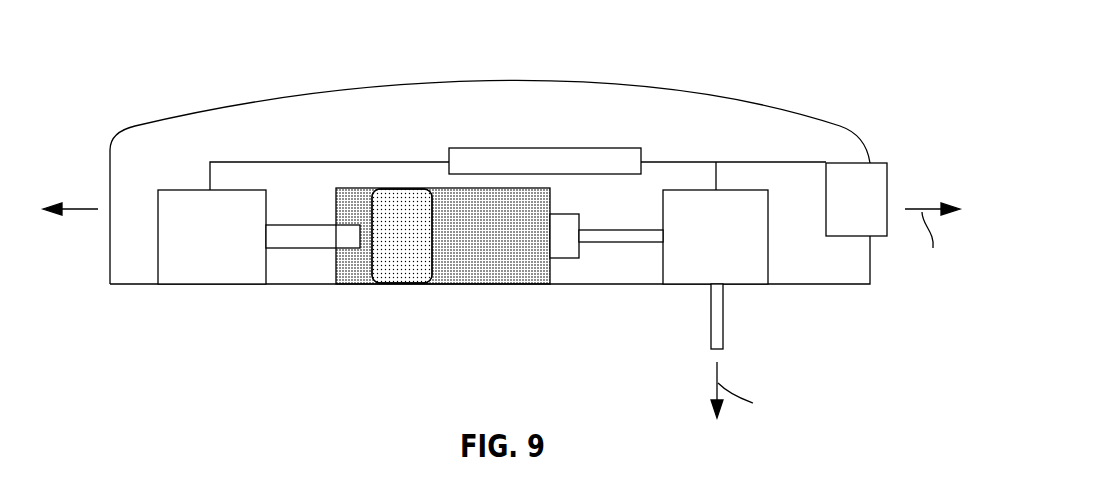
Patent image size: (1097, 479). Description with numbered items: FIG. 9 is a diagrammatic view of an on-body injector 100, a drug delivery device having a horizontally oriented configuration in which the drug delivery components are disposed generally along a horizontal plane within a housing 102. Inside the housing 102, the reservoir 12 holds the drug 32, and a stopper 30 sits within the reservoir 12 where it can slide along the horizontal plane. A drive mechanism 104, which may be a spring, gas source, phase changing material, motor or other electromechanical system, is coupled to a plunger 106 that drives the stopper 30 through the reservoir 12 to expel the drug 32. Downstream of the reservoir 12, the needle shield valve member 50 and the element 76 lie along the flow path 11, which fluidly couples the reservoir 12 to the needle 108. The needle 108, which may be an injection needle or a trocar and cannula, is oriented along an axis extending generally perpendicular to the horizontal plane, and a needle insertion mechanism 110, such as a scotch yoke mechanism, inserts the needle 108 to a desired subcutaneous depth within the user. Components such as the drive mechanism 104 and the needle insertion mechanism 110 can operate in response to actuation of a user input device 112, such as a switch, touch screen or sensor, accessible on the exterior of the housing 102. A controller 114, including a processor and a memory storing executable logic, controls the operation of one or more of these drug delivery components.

The on-body injector 100 is at (828, 45).
The housing 102 is at (133, 126).
The drive mechanism 104 is at (203, 270).
The plunger 106 is at (298, 238).
The needle 108 is at (725, 348).
The needle insertion mechanism 110 is at (745, 268).
The user input device 112 is at (880, 162).
The controller 114 is at (518, 160).
The flow path 11 is at (532, 292).
The reservoir 12 is at (477, 272).
The stopper 30 is at (398, 272).
The drug 32 is at (497, 234).
The needle shield valve member 50 is at (563, 245).
The second push rod 76 is at (617, 243).